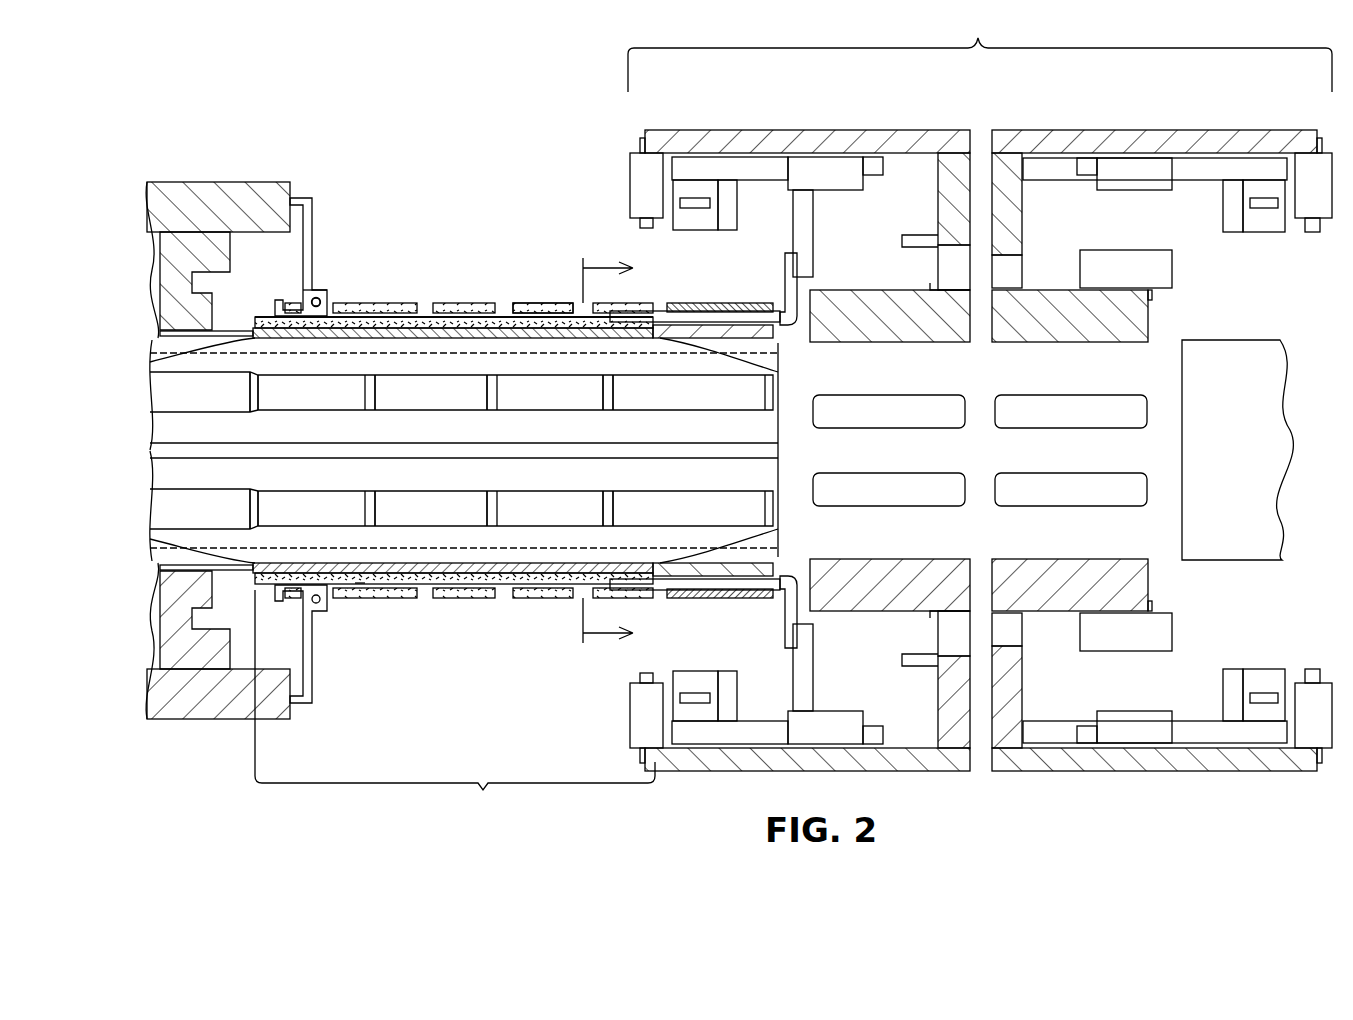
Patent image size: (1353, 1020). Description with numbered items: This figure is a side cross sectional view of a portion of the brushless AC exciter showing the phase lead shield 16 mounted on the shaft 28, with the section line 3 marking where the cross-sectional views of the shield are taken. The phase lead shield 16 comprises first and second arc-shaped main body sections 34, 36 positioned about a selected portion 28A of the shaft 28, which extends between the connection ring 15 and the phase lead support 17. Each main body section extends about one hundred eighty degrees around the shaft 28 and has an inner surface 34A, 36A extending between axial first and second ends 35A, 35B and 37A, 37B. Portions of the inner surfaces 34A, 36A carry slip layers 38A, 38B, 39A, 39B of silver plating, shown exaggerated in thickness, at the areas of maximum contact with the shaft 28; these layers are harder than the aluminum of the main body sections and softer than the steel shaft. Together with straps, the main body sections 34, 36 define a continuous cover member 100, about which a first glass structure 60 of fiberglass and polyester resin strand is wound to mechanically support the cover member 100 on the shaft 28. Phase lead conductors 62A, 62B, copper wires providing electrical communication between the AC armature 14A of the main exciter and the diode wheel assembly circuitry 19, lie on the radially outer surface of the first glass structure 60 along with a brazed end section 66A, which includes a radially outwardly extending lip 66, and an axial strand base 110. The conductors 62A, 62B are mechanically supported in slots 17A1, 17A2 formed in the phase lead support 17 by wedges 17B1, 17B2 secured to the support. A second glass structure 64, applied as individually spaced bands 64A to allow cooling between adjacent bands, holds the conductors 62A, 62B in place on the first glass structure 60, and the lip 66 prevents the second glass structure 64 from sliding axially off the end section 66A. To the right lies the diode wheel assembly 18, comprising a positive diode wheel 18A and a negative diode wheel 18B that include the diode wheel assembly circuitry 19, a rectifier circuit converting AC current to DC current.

The AC armature 14A is at (172, 182).
The connection ring 15 is at (187, 262).
The phase lead shield 16 is at (425, 172).
The phase lead support 17 is at (744, 302).
The slot 17A1 is at (797, 283).
The slot 17A2 is at (800, 618).
The wedge 17B1 is at (703, 302).
The wedge 17B2 is at (715, 598).
The diode wheel assembly 18 is at (980, 47).
The positive diode wheel 18A is at (855, 130).
The negative diode wheel 18B is at (1153, 130).
The diode wheel assembly circuitry 19 is at (748, 157).
The shaft 28 is at (178, 428).
The selected portion of the shaft 28A is at (455, 711).
The first main body section 34 is at (254, 322).
The inner surface of first main body section 34A is at (436, 335).
The axial first end 35A is at (240, 340).
The axial second end 35B is at (755, 360).
The second main body section 36 is at (254, 579).
The inner surface of second main body section 36A is at (446, 567).
The axial first end 37A is at (240, 560).
The axial second end 37B is at (755, 541).
The slip layer 38A is at (298, 338).
The slip layer 38B is at (622, 335).
The slip layer 39A is at (298, 563).
The slip layer 39B is at (622, 567).
The first glass structure 60 is at (509, 316).
The phase lead conductor 62A is at (278, 316).
The phase lead conductor 62B is at (488, 600).
The second glass structure 64 is at (543, 303).
The bands 64A is at (455, 302).
The lip 66 is at (303, 298).
The end section 66A is at (383, 303).
The continuous cover member 100 is at (360, 582).
The axial strand base 110 is at (322, 300).
The section line 3- 3 is at (608, 449).